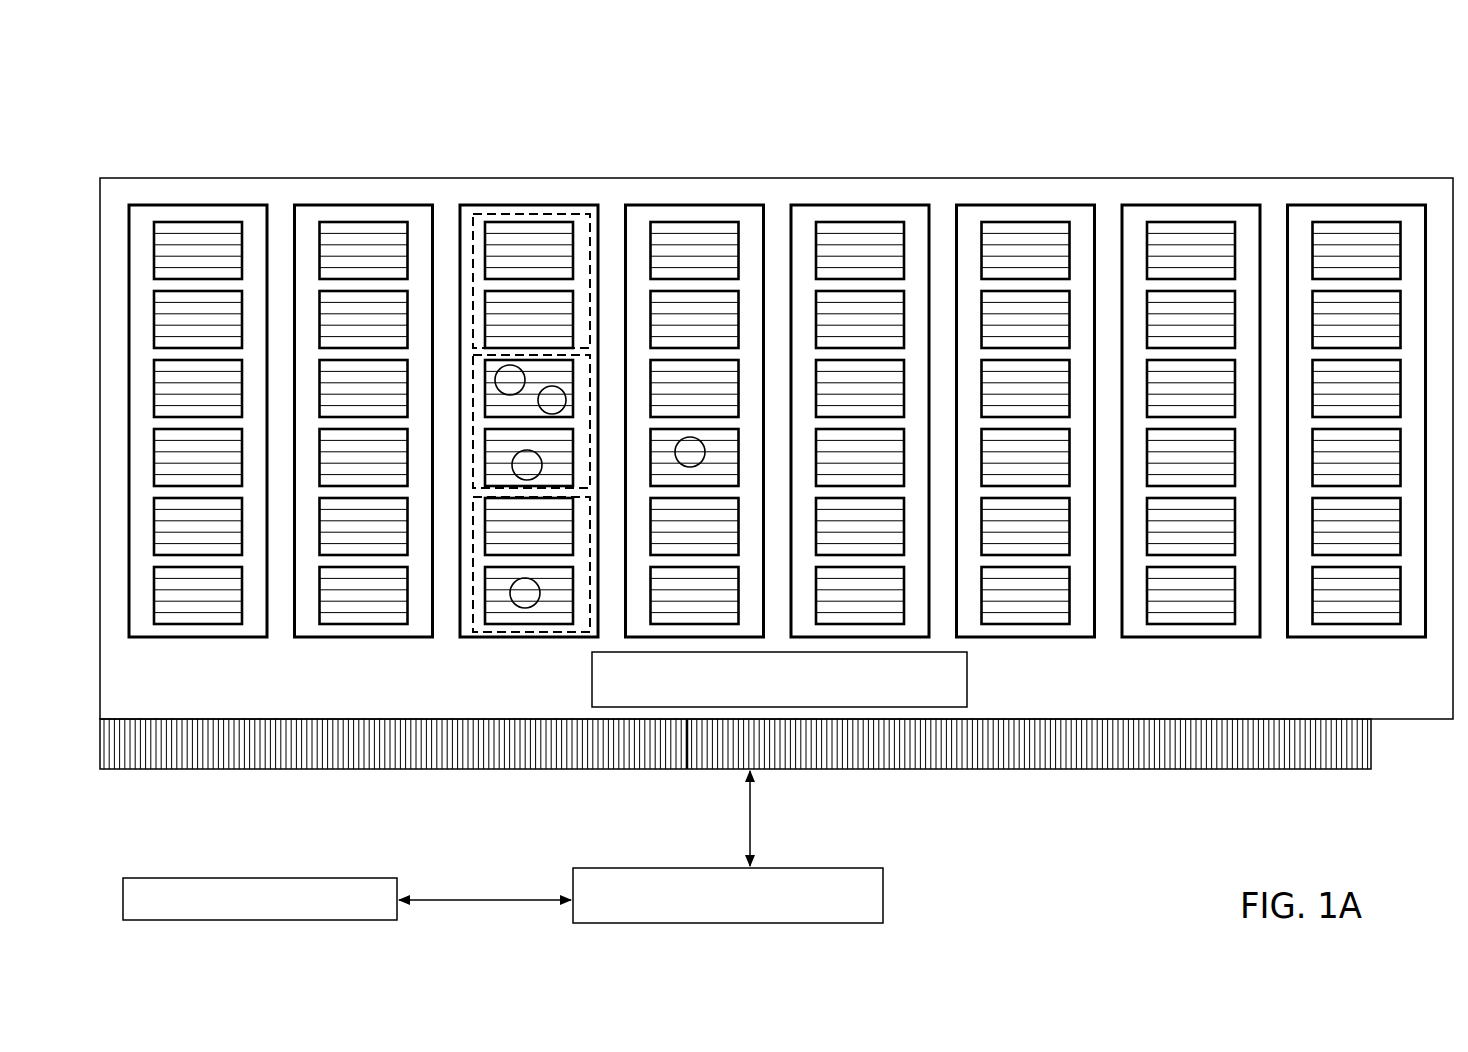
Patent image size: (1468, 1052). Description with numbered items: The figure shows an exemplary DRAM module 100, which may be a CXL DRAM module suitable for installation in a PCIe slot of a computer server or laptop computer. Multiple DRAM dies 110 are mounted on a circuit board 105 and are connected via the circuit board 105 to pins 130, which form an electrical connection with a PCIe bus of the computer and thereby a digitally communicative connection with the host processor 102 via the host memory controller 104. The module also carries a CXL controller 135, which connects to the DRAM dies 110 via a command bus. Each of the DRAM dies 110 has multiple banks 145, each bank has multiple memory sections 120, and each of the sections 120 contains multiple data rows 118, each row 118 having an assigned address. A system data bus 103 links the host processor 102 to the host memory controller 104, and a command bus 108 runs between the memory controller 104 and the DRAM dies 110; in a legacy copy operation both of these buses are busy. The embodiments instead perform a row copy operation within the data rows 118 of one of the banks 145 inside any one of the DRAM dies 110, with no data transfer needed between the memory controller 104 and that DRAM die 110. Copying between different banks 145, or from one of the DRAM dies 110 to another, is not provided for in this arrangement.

The DRAM module 100 is at (765, 483).
The circuit board 105 is at (104, 178).
The DRAM dies 110 is at (330, 205).
The memory sections 120 is at (387, 293).
The data rows 118 is at (370, 435).
The banks 145 is at (473, 442).
The CXL controller 135 is at (779, 679).
The pins 130 is at (965, 738).
The command bus 108 is at (731, 818).
The host processor 102 is at (260, 885).
The system data bus 103 is at (485, 885).
The host memory controller 104 is at (728, 895).